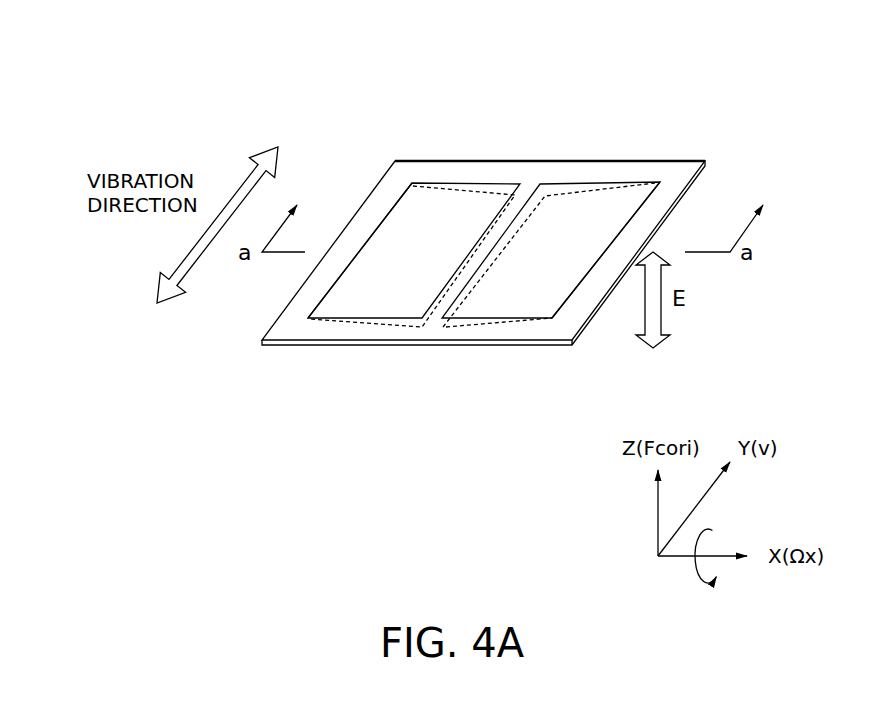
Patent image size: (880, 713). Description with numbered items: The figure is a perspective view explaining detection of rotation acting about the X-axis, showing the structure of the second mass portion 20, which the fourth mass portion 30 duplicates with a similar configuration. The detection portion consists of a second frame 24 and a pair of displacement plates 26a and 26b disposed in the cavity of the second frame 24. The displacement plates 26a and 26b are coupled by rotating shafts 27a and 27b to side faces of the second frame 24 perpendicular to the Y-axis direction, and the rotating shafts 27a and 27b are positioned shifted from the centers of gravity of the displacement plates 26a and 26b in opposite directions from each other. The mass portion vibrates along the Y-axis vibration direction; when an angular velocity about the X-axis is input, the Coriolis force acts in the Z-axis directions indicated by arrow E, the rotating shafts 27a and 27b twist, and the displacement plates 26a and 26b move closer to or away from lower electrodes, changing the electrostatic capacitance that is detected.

The second mass portion 20 is at (483, 204).
The fourth mass portion 30 is at (483, 253).
The second frame 24 is at (502, 161).
The displacement plate 26a is at (438, 205).
The displacement plate 26b is at (592, 205).
The rotating shaft 27a is at (413, 181).
The rotating shaft 27b is at (657, 181).